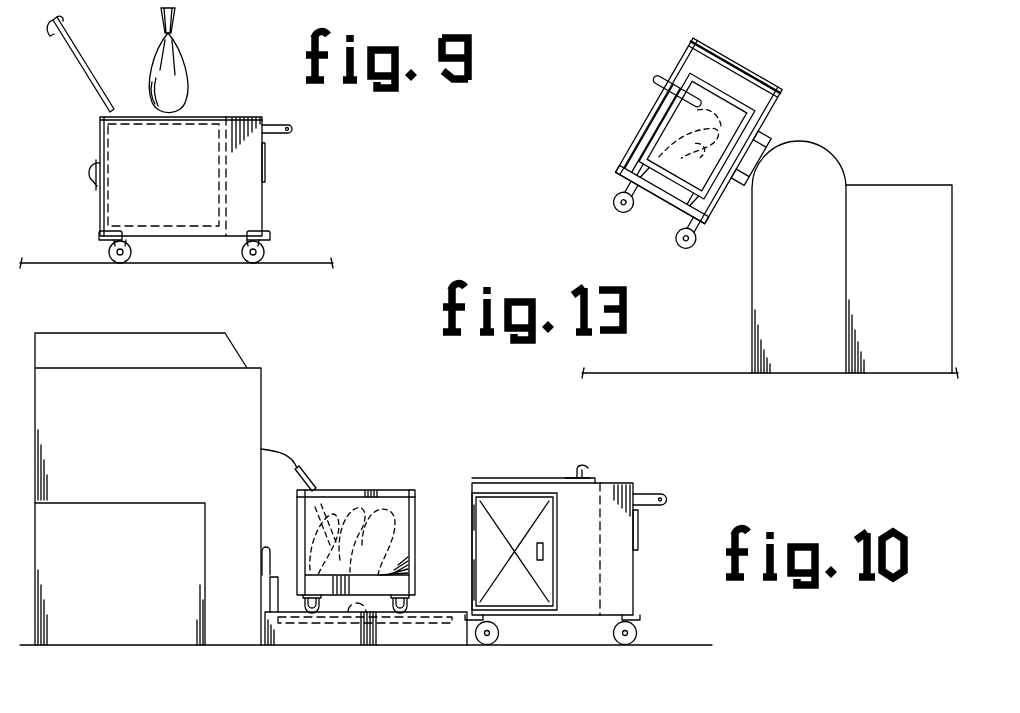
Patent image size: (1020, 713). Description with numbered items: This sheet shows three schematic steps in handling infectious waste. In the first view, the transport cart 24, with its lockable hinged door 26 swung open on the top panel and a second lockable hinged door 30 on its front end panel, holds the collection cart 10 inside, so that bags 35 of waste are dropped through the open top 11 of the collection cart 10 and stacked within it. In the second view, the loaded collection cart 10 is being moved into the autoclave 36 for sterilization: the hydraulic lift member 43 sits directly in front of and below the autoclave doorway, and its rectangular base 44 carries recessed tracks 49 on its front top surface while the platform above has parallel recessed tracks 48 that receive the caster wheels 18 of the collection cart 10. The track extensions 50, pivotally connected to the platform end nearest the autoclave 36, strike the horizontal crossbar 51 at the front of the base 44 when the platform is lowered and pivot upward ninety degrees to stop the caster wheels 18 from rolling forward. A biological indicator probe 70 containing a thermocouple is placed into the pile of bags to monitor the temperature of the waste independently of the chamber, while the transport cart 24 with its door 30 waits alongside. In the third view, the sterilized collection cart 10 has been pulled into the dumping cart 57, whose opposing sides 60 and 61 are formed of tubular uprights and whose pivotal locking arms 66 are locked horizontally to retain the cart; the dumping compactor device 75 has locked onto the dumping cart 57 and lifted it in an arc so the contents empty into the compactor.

In FIG. 9, the collection cart 10 is at (179, 174).
In FIG. 10, the collection cart 10 is at (363, 556).
In FIG. 13, the collection cart 10 is at (694, 145).
In FIG. 9, the open top 11 is at (191, 123).
In FIG. 10, the caster wheels 18 is at (406, 598).
In FIG. 9, the transport cart 24 is at (268, 158).
In FIG. 10, the transport cart 24 is at (636, 574).
In FIG. 9, the lockable hinged door 26 is at (83, 53).
In FIG. 9, the lockable hinged door 30 is at (99, 147).
In FIG. 10, the lockable hinged door 30 is at (536, 532).
In FIG. 9, the bags 35 is at (183, 81).
In FIG. 10, the autoclave 36 is at (155, 438).
In FIG. 10, the hydraulic lift member 43 is at (369, 658).
In FIG. 10, the rectangular base 44 is at (328, 634).
In FIG. 10, the recessed tracks 48 is at (381, 650).
In FIG. 10, the recessed tracks 49 is at (432, 607).
In FIG. 10, the track extensions 50 is at (270, 599).
In FIG. 10, the crossbar 51 is at (262, 553).
In FIG. 13, the dumping cart 57 is at (655, 208).
In FIG. 13, the side 60 is at (691, 145).
In FIG. 13, the side 61 is at (751, 158).
In FIG. 13, the pivotal locking arms 66 is at (677, 91).
In FIG. 10, the biological indicator probe 70 is at (308, 479).
In FIG. 13, the dumping compactor device 75 is at (818, 271).